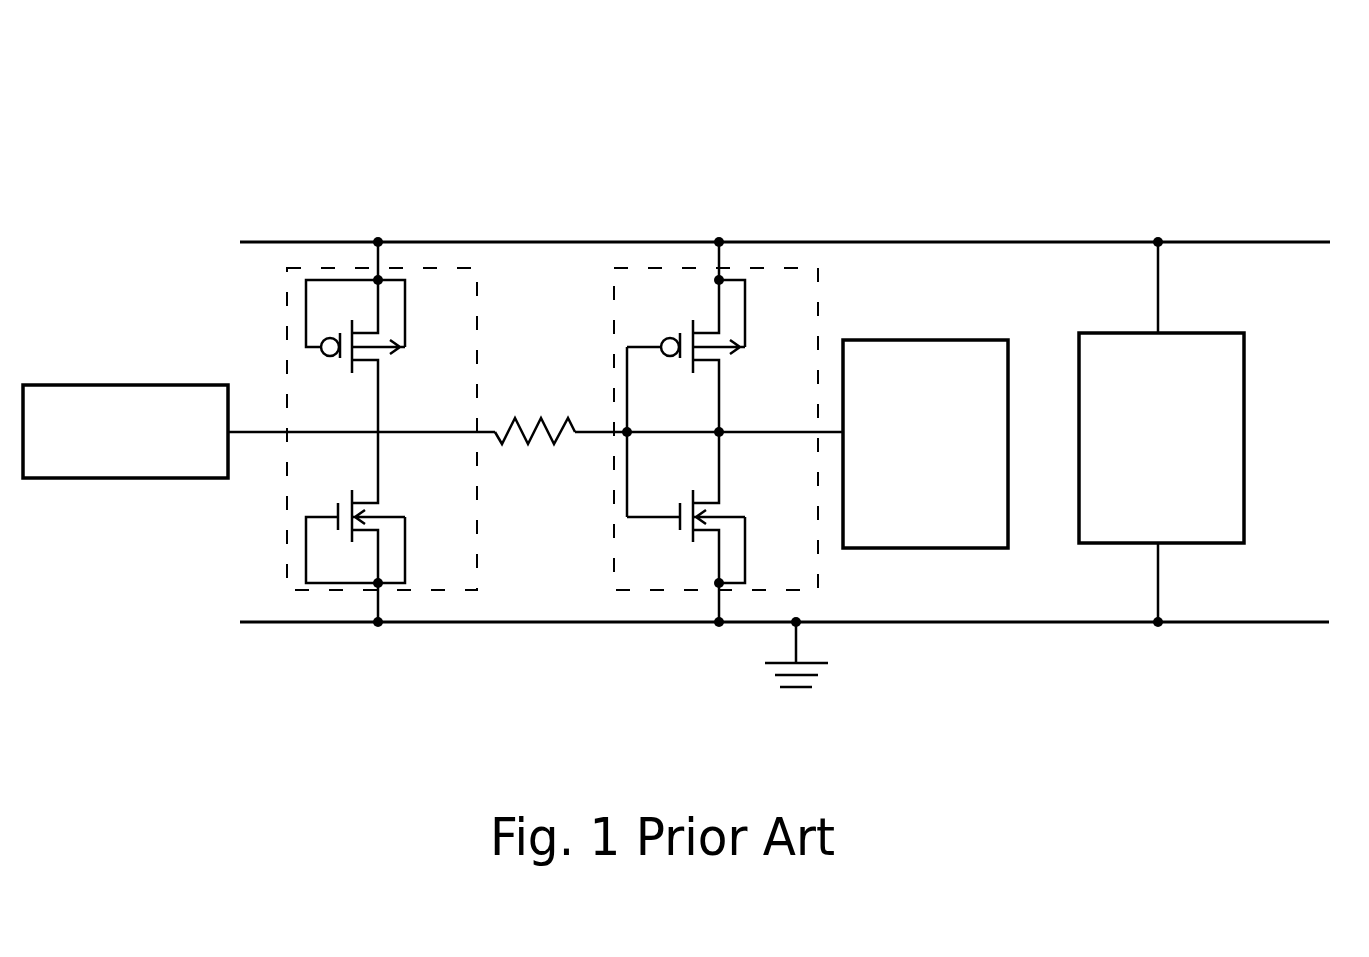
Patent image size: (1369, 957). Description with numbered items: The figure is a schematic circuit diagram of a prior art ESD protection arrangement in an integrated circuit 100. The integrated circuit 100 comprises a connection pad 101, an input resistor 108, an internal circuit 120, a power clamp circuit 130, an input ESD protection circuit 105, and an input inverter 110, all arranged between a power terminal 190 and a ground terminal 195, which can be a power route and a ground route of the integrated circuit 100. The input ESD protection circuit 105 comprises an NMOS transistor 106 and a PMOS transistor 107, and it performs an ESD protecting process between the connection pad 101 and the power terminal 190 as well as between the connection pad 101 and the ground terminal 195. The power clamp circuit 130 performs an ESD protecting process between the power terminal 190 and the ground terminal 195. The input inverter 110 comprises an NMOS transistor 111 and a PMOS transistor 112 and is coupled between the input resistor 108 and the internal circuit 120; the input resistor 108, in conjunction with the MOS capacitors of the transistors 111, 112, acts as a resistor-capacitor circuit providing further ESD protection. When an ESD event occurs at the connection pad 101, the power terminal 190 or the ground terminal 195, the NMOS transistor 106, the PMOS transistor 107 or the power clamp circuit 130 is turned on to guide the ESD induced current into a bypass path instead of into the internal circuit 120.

The integrated circuit 100 is at (200, 158).
The connection pad 101 is at (107, 385).
The input ESD protection circuit 105 is at (412, 268).
The NMOS transistor 106 is at (377, 510).
The PMOS transistor 107 is at (377, 352).
The input resistor 108 is at (548, 418).
The input inverter 110 is at (760, 268).
The NMOS transistor 111 is at (718, 510).
The PMOS transistor 112 is at (718, 352).
The internal circuit 120 is at (922, 340).
The power clamp circuit 130 is at (1205, 333).
The power terminal 190 is at (1296, 242).
The ground terminal 195 is at (1277, 622).